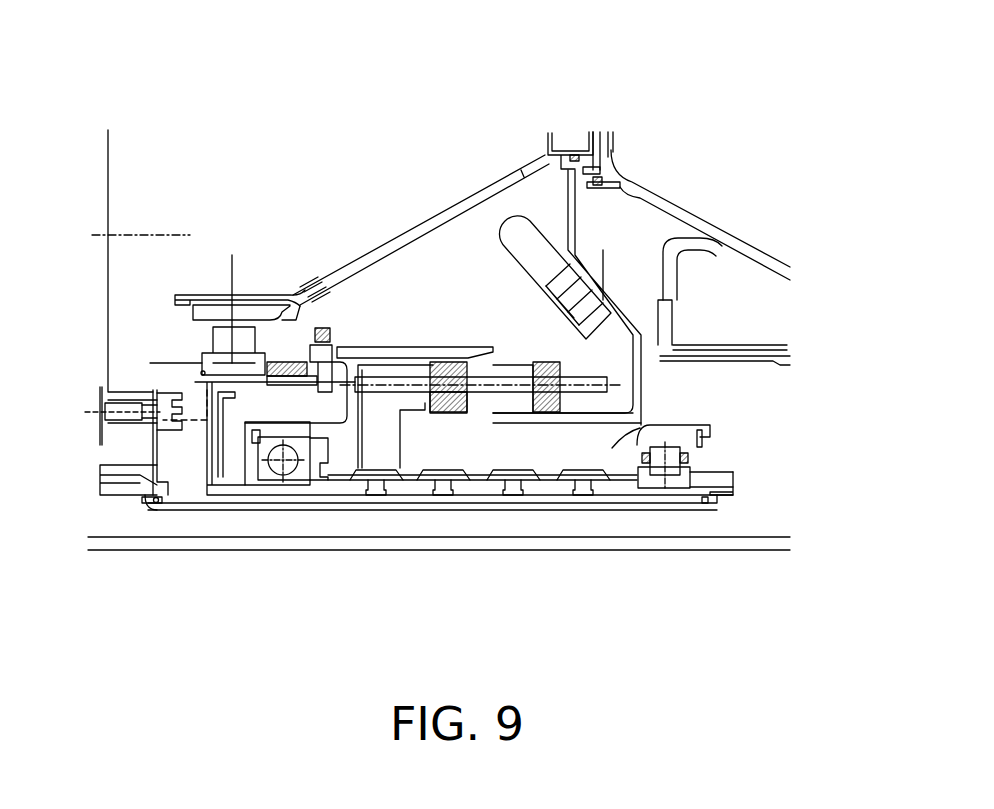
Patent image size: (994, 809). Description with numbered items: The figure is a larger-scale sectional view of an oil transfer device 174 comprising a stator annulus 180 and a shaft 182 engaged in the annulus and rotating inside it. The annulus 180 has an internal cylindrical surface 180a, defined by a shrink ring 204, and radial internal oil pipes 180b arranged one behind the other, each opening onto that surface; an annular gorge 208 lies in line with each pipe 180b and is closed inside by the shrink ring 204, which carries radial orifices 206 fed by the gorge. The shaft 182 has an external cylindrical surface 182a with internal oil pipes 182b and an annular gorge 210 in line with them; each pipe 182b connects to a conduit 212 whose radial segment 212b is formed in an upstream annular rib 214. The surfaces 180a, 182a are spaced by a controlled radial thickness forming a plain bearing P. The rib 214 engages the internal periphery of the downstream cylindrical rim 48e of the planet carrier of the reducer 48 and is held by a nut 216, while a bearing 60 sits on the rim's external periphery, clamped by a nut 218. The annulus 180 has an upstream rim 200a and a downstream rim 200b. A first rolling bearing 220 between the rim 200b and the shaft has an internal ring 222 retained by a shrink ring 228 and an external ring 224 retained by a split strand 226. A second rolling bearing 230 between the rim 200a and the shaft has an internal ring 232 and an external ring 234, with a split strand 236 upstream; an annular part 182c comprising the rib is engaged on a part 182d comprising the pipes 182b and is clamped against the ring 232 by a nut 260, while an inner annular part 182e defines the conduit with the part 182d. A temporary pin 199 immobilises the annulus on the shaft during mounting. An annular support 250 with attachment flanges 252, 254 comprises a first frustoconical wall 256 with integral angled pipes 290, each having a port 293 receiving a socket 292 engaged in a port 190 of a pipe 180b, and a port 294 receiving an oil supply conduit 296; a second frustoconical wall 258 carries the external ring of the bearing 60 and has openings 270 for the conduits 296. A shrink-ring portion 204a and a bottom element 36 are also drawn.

The base 36 is at (690, 552).
The reducer 48 is at (118, 230).
The downstream cylindrical rim 48e is at (157, 378).
The bearing 60 is at (249, 290).
The oil transfer device 174 is at (746, 494).
The stator annulus 180 is at (666, 423).
The internal cylindrical surface 180a is at (408, 472).
The internal oil pipes 180b is at (366, 440).
The shaft 182 is at (383, 493).
The external cylindrical surface 182a is at (487, 492).
The internal oil pipes 182b is at (540, 497).
The annular part 182c is at (218, 441).
The annular part 182d is at (745, 492).
The annular part 182e is at (156, 515).
The first port 190 is at (460, 346).
The temporary pin 199 is at (396, 274).
The upstream cylindrical rim 200a is at (250, 462).
The downstream cylindrical rim 200b is at (616, 448).
The shrink ring 204 is at (633, 465).
The plate portion 204a is at (327, 482).
The radial orifices 206 is at (400, 485).
The annular gorge 208 is at (674, 325).
The annular gorge 210 is at (662, 356).
The conduit 212 is at (302, 507).
The radial segment 212b is at (110, 432).
The upstream annular rib 214 is at (106, 421).
The nut 216 is at (103, 400).
The nut 218 is at (291, 296).
The first rolling bearing 220 is at (722, 466).
The internal ring 222 is at (451, 514).
The external ring 224 is at (646, 448).
The annular split strand 226 is at (712, 447).
The shrink ring 228 is at (742, 477).
The second rolling bearing 230 is at (210, 480).
The internal ring 232 is at (283, 478).
The external ring 234 is at (254, 457).
The annular split strand 236 is at (212, 304).
The annular support 250 is at (528, 150).
The annular flange 252 is at (610, 130).
The annular flange 254 is at (597, 130).
The first frustoconical wall 256 is at (581, 232).
The second frustoconical wall 258 is at (468, 195).
The nut 260 is at (97, 487).
The openings 270 is at (324, 343).
The pipes 290 is at (627, 318).
The oil supply socket 292 is at (501, 346).
The port 293 is at (538, 338).
The port 294 is at (603, 300).
The oil supply conduit 296 is at (566, 242).
The plain bearing P is at (604, 490).